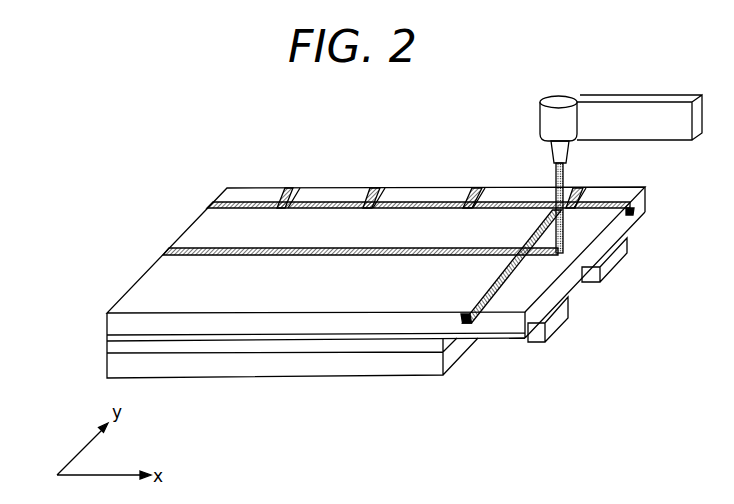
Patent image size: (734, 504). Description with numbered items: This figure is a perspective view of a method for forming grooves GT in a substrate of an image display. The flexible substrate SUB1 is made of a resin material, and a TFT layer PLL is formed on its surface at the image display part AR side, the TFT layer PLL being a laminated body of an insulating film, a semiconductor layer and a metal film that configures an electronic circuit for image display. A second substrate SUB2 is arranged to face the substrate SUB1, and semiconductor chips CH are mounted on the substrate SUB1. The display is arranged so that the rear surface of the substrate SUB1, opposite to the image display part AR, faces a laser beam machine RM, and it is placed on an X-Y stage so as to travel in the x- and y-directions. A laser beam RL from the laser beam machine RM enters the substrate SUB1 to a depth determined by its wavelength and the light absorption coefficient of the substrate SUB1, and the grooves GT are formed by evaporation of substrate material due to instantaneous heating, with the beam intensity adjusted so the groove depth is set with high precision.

The substrate SUB1 is at (201, 228).
The substrate SUB2 is at (312, 368).
The TFT layer PLL is at (107, 338).
The image display part AR is at (128, 350).
The grooves GT is at (381, 188).
The laser beam RL is at (566, 227).
The semiconductor chips CH is at (555, 320).
The laser beam machine RM is at (605, 105).